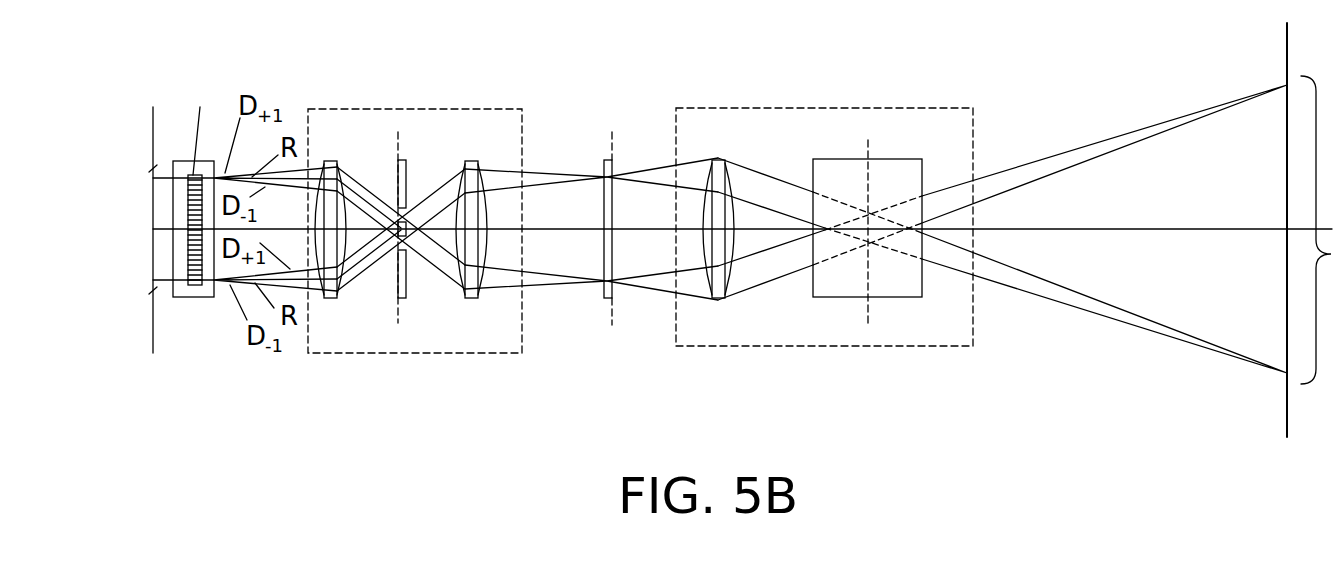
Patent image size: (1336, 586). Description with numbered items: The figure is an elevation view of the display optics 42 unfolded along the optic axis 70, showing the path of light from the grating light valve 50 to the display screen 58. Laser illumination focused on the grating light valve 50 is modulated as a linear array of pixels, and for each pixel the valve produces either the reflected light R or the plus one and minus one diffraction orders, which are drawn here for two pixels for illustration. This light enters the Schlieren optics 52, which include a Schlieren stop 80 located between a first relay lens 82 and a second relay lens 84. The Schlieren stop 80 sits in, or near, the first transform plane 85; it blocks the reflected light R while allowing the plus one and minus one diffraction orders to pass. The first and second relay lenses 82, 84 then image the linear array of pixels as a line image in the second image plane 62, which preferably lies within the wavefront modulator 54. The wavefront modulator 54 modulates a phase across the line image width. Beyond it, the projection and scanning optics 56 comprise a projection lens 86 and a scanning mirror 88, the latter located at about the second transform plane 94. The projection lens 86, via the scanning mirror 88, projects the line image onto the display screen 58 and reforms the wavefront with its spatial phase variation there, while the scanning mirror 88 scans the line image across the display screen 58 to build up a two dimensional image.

The display optics 42 is at (525, 88).
The grating light valve 50 is at (185, 300).
The Schlieren optics 52 is at (392, 108).
The wavefront modulator 54 is at (605, 158).
The projection and scanning optics 56 is at (800, 108).
The display screen 58 is at (1286, 40).
The second image plane 62 is at (612, 312).
The optic axis 70 is at (1107, 229).
The Schlieren stop 80 is at (406, 159).
The first relay lens 82 is at (337, 161).
The second relay lens 84 is at (470, 161).
The first transform plane 85 is at (398, 310).
The projection lens 86 is at (720, 158).
The scanning mirror 88 is at (913, 159).
The second transform plane 94 is at (867, 315).